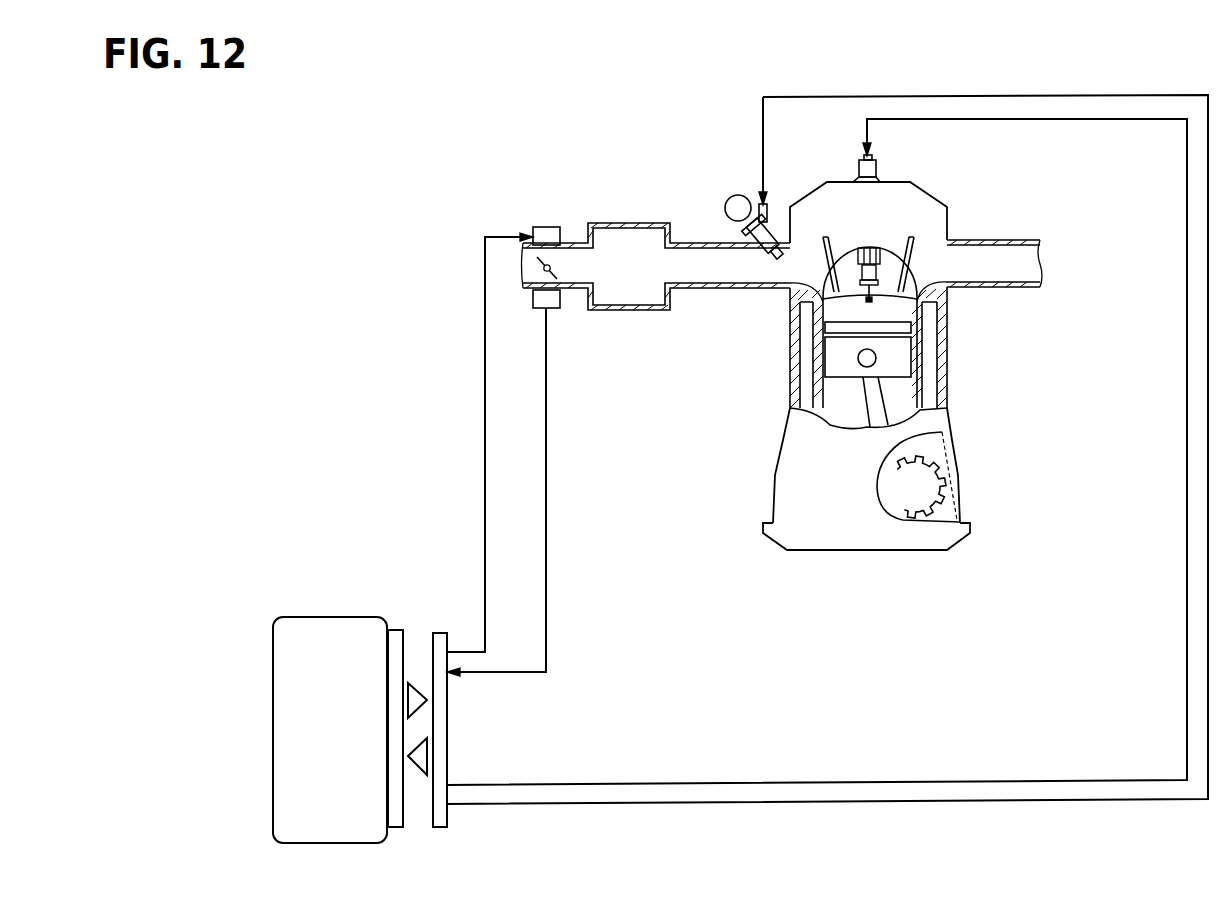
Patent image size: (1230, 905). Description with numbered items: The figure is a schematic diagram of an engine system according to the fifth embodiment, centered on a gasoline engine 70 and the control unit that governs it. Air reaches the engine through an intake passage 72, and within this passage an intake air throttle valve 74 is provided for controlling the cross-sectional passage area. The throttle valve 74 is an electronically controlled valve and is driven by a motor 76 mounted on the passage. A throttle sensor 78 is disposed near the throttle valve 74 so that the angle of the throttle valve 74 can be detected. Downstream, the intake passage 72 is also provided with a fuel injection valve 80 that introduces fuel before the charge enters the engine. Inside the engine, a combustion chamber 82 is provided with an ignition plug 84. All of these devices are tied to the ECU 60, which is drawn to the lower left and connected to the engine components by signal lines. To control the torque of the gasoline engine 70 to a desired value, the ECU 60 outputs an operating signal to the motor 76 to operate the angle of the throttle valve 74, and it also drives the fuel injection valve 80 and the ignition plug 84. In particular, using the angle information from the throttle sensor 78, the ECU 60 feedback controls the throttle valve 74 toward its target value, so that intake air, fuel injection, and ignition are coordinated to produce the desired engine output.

The ECU 60 is at (304, 617).
The gasoline engine 70 is at (902, 344).
The intake passage 72 is at (705, 284).
The intake air throttle valve 74 is at (551, 273).
The motor 76 is at (546, 227).
The throttle sensor 78 is at (552, 308).
The fuel injection valve 80 is at (737, 196).
The combustion chamber 82 is at (897, 315).
The ignition plug 84 is at (882, 245).